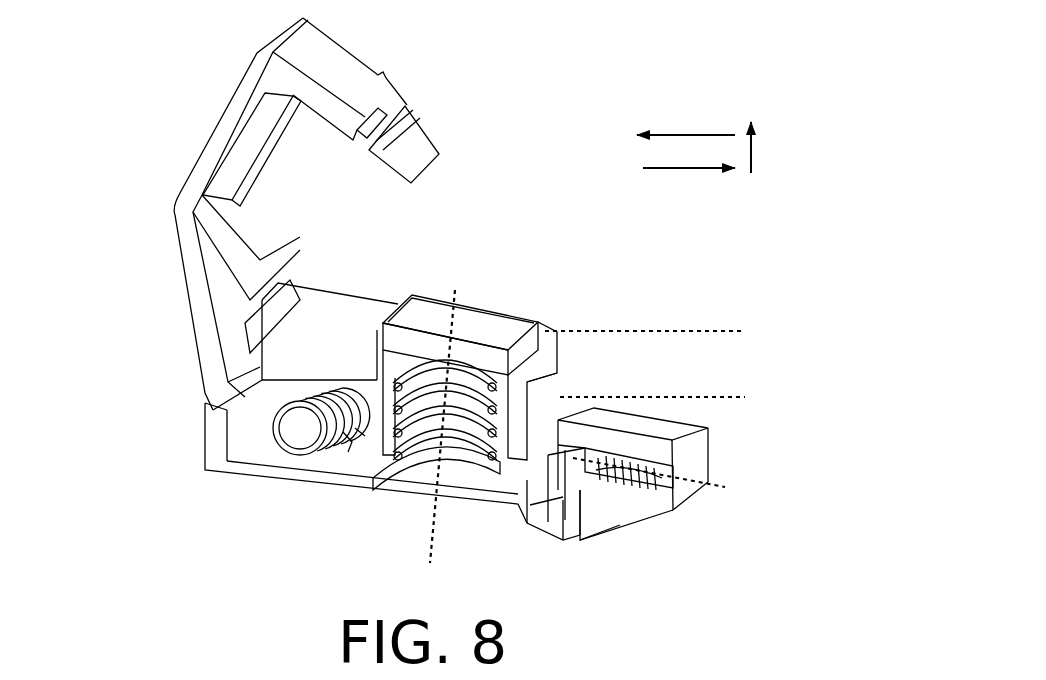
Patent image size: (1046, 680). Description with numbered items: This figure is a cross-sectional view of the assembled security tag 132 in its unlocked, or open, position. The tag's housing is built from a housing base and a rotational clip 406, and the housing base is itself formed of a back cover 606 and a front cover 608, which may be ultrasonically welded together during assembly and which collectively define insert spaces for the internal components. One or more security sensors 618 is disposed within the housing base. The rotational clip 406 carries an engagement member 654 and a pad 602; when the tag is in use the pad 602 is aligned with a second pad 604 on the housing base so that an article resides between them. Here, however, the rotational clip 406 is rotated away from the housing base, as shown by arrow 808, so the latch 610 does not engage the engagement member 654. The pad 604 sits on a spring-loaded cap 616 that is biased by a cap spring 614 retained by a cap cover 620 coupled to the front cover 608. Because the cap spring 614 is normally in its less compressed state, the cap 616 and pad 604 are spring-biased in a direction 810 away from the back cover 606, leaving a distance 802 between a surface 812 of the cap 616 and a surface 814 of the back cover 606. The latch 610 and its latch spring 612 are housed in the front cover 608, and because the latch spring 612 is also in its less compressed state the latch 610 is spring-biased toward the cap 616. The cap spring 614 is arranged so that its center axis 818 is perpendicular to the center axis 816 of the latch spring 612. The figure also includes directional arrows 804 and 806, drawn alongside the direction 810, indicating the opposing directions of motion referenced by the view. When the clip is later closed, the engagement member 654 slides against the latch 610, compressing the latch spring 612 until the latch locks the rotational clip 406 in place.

The security tag 132 is at (685, 73).
The rotational clip 406 is at (208, 110).
The engagement member 654 is at (504, 85).
The pad 602 is at (277, 152).
The pad 604 is at (473, 313).
The cap 616 is at (407, 298).
The arrow 808 is at (432, 180).
The surface 812 is at (712, 280).
The distance 802 is at (735, 395).
The surface 814 is at (826, 421).
The back cover 606 is at (688, 443).
The center axis 816 is at (764, 501).
The front cover 608 is at (680, 510).
The latch spring 612 is at (618, 483).
The latch 610 is at (568, 458).
The center axis 818 is at (446, 586).
The cap spring 614 is at (420, 463).
The cap cover 620 is at (385, 491).
The security sensor 618 is at (290, 432).
The Direction arrow 804 is at (711, 131).
The Direction arrow 806 is at (711, 193).
The direction 810 is at (800, 163).